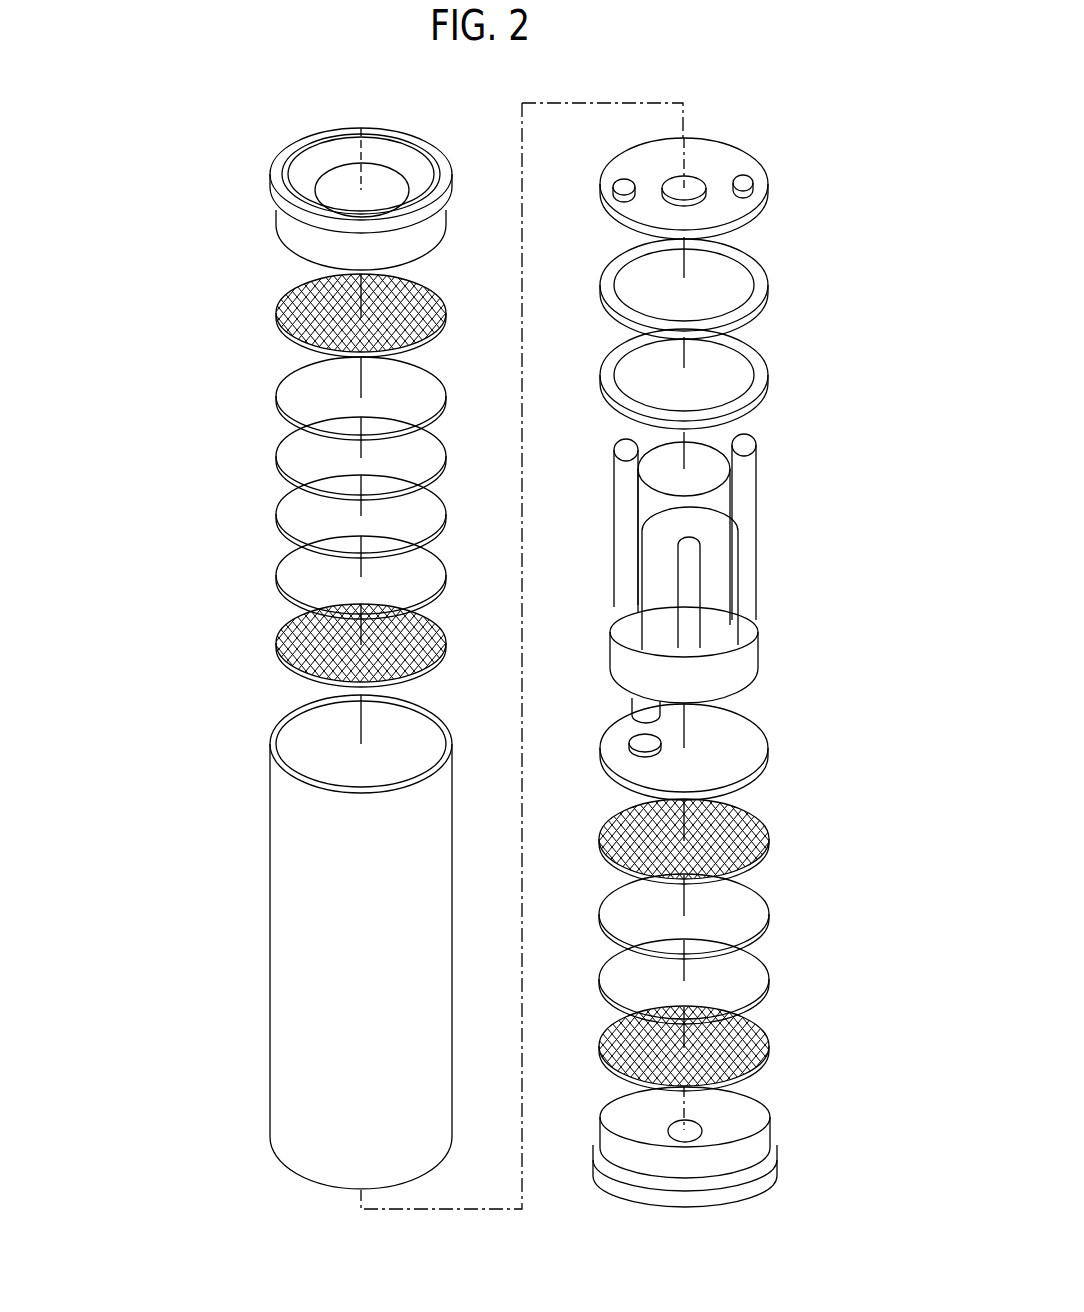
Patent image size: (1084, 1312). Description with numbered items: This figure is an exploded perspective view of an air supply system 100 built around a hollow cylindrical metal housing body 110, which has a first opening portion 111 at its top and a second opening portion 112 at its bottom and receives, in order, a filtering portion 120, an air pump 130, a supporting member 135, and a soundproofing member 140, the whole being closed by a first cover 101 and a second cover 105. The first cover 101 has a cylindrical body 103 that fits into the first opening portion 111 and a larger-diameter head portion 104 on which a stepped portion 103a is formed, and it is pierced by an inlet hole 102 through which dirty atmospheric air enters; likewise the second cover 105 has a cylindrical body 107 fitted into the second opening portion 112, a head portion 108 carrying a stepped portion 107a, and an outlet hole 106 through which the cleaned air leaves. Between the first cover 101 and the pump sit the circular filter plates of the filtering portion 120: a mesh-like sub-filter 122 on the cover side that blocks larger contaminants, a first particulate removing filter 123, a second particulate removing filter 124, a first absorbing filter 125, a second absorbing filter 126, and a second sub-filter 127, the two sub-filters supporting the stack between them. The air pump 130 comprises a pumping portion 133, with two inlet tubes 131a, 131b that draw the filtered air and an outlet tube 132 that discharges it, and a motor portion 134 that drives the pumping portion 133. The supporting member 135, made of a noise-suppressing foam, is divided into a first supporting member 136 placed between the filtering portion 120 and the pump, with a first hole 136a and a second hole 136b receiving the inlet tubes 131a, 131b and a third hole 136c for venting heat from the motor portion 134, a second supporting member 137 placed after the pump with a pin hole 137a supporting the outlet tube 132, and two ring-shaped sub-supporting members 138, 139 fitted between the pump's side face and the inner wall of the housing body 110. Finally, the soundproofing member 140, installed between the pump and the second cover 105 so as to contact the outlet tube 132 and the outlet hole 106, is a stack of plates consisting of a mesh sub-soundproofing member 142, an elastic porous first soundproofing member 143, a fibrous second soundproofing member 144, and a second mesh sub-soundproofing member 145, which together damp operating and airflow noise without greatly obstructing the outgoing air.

The air supply system 100 is at (181, 133).
The first cover 101 is at (405, 130).
The inlet hole 102 is at (336, 190).
The cylindrical body 103 is at (300, 248).
The stepped portion 103a is at (283, 222).
The head portion 104 is at (275, 201).
The second cover 105 is at (740, 1090).
The outlet hole 106 is at (698, 1127).
The cylindrical body 107 is at (748, 1147).
The stepped portion 107a is at (775, 1157).
The head portion 108 is at (778, 1177).
The metal housing body 110 is at (275, 922).
The first opening portion 111 is at (307, 750).
The second opening portion 112 is at (279, 1168).
The filtering portion 120 is at (172, 336).
The sub-filter 122 is at (298, 322).
The first particulate removing filter 123 is at (298, 381).
The second particulate removing filter 124 is at (298, 440).
The first absorbing filter 125 is at (298, 498).
The second absorbing filter 126 is at (298, 562).
The sub-filter 127 is at (297, 630).
The air pump 130 is at (792, 553).
The inlet tube 131a is at (623, 498).
The inlet tube 131b is at (747, 446).
The outlet tube 132 is at (637, 703).
The pumping portion 133 is at (755, 641).
The motor portion 134 is at (728, 492).
The supporting member 135 is at (793, 103).
The first supporting member 136 is at (760, 197).
The first hole 136a is at (620, 180).
The second hole 136b is at (752, 185).
The third hole 136c is at (692, 183).
The second supporting member 137 is at (762, 753).
The pin hole 137a is at (635, 744).
The sub-supporting member 138 is at (767, 286).
The sub-supporting member 139 is at (767, 376).
The soundproofing member 140 is at (825, 800).
The sub-soundproofing member 142 is at (768, 832).
The first soundproofing member 143 is at (760, 903).
The second soundproofing member 144 is at (763, 975).
The sub-soundproofing member 145 is at (768, 1032).